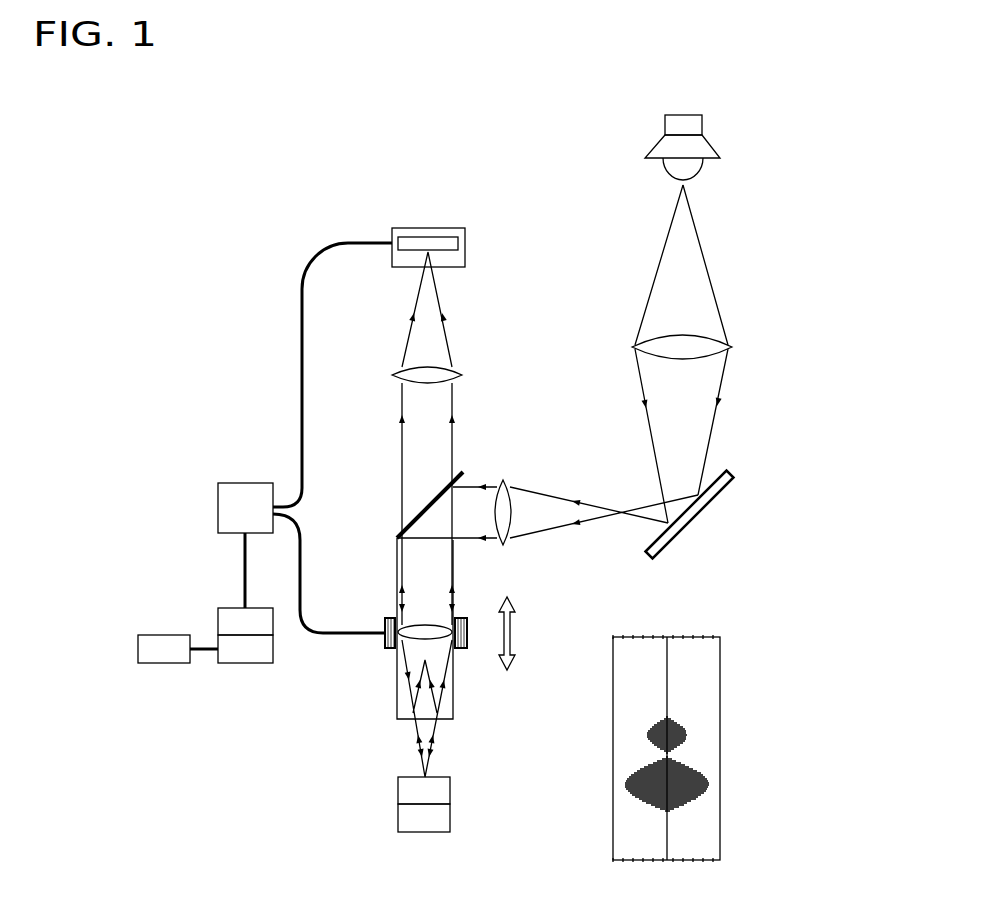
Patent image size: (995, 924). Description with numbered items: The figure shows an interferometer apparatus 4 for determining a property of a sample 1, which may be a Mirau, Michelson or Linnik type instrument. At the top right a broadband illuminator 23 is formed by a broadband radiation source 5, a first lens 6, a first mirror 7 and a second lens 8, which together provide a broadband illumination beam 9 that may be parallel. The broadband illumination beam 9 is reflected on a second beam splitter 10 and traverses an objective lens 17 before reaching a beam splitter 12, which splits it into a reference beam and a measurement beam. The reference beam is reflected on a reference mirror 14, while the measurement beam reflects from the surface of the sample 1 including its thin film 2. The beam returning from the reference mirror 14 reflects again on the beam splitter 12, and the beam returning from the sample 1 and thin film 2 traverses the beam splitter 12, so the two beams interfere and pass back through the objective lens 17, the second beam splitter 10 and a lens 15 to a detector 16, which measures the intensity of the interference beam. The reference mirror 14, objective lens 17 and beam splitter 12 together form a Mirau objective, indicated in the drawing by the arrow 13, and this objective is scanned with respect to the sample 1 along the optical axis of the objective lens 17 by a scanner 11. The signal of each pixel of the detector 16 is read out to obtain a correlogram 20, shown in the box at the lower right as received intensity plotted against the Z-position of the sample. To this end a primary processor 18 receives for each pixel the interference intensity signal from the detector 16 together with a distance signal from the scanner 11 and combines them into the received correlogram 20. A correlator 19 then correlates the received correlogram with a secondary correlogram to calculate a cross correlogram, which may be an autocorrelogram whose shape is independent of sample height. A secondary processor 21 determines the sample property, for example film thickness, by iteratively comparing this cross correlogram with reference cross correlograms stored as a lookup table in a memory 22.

The sample 1 is at (450, 822).
The thin film 2 is at (450, 790).
The apparatus 4 is at (670, 78).
The broadband radiation source 5 is at (713, 148).
The first lens 6 is at (732, 347).
The first mirror 7 is at (703, 513).
The second lens 8 is at (502, 480).
The broadband illumination beam 9 is at (468, 500).
The second beam splitter 10 is at (415, 520).
The scanner 11 is at (385, 640).
The beam splitter 12 is at (397, 710).
The objective unit 13 is at (398, 740).
The reference mirror 14 is at (422, 662).
The lens 15 is at (393, 375).
The detector 16 is at (428, 228).
The objective lens 17 is at (420, 630).
The primary processor 18 is at (218, 511).
The correlator 19 is at (218, 620).
The correlogram 20 is at (720, 830).
The secondary processor 21 is at (247, 663).
The memory 22 is at (137, 650).
The broadband illuminator 23 is at (580, 410).